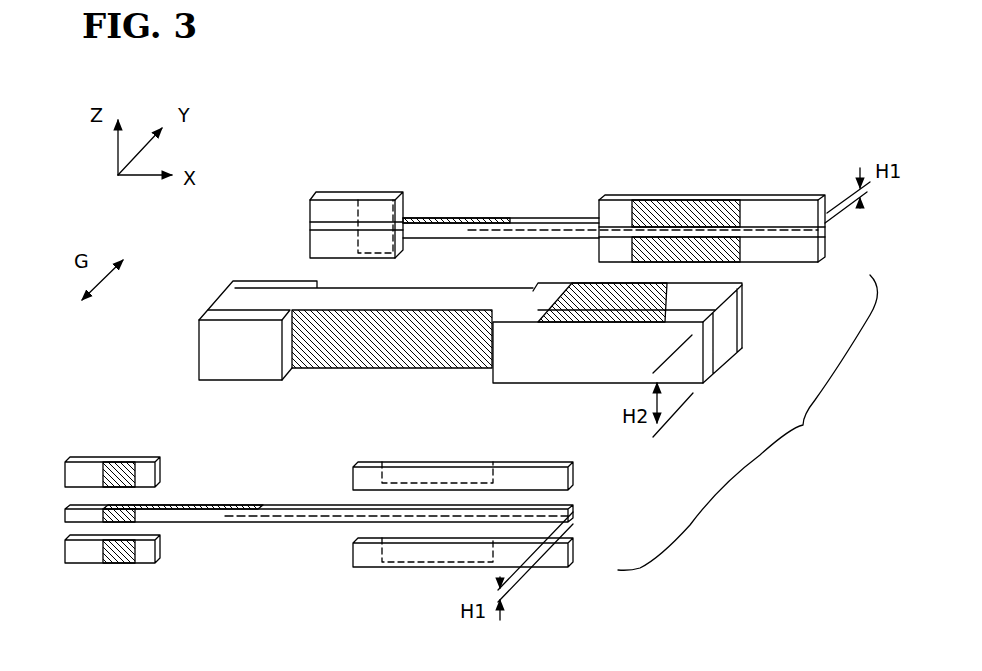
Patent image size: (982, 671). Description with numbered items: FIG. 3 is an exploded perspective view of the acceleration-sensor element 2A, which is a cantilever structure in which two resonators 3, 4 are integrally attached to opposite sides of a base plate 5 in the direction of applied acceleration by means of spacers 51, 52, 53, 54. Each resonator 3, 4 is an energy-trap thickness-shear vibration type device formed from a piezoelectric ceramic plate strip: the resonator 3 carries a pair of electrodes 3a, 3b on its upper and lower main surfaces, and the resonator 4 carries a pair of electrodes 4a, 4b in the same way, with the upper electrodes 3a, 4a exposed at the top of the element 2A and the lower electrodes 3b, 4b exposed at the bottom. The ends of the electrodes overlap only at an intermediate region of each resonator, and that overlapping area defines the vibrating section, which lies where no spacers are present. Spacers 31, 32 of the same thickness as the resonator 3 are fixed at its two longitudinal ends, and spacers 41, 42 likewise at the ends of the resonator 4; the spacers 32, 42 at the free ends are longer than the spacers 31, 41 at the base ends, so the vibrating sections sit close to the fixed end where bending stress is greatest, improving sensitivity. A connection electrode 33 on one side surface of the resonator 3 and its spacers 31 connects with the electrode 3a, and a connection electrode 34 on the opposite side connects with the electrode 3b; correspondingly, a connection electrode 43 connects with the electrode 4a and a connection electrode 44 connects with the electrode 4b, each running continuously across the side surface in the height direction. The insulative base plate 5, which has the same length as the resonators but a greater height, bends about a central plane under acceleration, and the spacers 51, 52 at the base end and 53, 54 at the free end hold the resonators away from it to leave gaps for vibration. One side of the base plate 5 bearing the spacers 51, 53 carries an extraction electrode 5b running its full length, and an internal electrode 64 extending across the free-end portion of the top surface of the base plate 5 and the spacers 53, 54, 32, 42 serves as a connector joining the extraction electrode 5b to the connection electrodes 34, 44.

The acceleration-sensor element 2A is at (748, 422).
The resonator 3 is at (319, 520).
The electrode 3a is at (194, 506).
The electrode 3b is at (301, 510).
The spacer 31 is at (80, 466).
The spacer 32 is at (364, 462).
The connection electrode 33 is at (113, 565).
The connection electrode 34 is at (493, 474).
The resonator 4 is at (610, 198).
The electrode 4a is at (445, 218).
The electrode 4b is at (536, 228).
The spacer 41 is at (312, 204).
The spacer 42 is at (712, 224).
The connection electrode 43 is at (357, 213).
The connection electrode 44 is at (632, 215).
The base plate 5 is at (476, 337).
The extraction electrode 5b is at (397, 372).
The spacer 51 is at (207, 352).
The spacer 52 is at (245, 283).
The spacer 53 is at (547, 372).
The spacer 54 is at (742, 312).
The internal electrode 64 is at (645, 310).